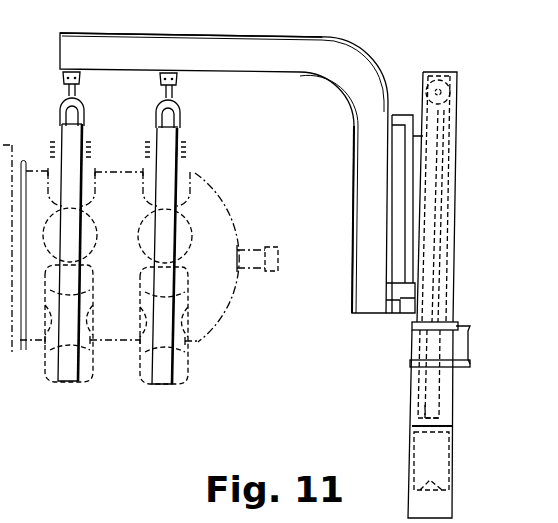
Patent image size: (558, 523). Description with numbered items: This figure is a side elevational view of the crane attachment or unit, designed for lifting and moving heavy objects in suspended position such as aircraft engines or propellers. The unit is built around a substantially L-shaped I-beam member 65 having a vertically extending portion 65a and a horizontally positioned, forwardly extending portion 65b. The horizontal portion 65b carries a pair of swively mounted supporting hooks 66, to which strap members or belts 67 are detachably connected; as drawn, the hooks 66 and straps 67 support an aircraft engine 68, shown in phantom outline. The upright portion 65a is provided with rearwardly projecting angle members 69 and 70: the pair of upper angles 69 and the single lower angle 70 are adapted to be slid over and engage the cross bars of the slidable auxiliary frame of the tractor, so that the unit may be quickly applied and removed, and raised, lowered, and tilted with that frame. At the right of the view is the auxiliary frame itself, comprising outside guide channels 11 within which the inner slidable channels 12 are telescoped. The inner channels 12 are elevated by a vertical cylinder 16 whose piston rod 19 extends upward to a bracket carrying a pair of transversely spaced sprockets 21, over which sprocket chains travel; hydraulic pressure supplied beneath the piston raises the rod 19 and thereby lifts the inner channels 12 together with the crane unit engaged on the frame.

The I-beam member 65 is at (301, 74).
The vertically extending portion 65a is at (397, 182).
The horizontally positioned forwardly extending portion 65b is at (191, 55).
The supporting hooks 66 is at (80, 96).
The strap members 67 is at (68, 200).
The aircraft engine 68 is at (200, 343).
The angle members 69 is at (399, 115).
The angle member 70 is at (401, 315).
The slidable channels 12 is at (455, 196).
The sprockets 21 is at (452, 92).
The guide channels 11 is at (455, 418).
The piston rod 19 is at (432, 398).
The vertical cylinder 16 is at (432, 453).